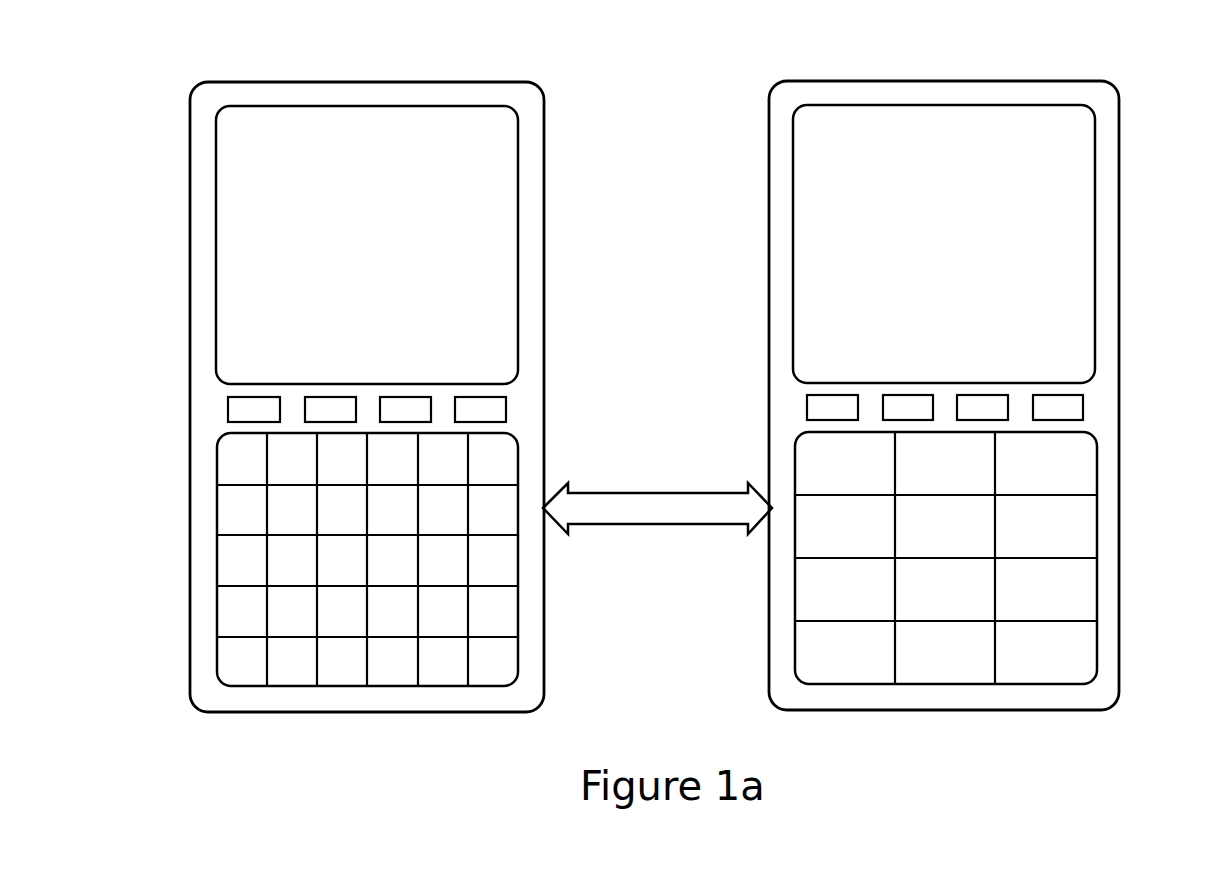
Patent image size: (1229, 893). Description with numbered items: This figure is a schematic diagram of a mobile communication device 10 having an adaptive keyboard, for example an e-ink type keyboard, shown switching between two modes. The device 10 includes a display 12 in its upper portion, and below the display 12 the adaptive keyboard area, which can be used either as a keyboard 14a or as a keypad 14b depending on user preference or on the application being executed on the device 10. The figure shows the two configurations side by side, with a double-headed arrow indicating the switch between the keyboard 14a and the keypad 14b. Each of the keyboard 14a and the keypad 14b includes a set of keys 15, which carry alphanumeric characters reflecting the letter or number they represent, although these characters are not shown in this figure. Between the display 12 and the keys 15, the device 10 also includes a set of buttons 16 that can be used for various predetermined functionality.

The mobile communication device 10 is at (410, 50).
The display 12 is at (655, 244).
The keyboard 14a is at (526, 567).
The keypad 14b is at (1104, 519).
The keys 15 is at (504, 668).
The buttons 16 is at (240, 415).